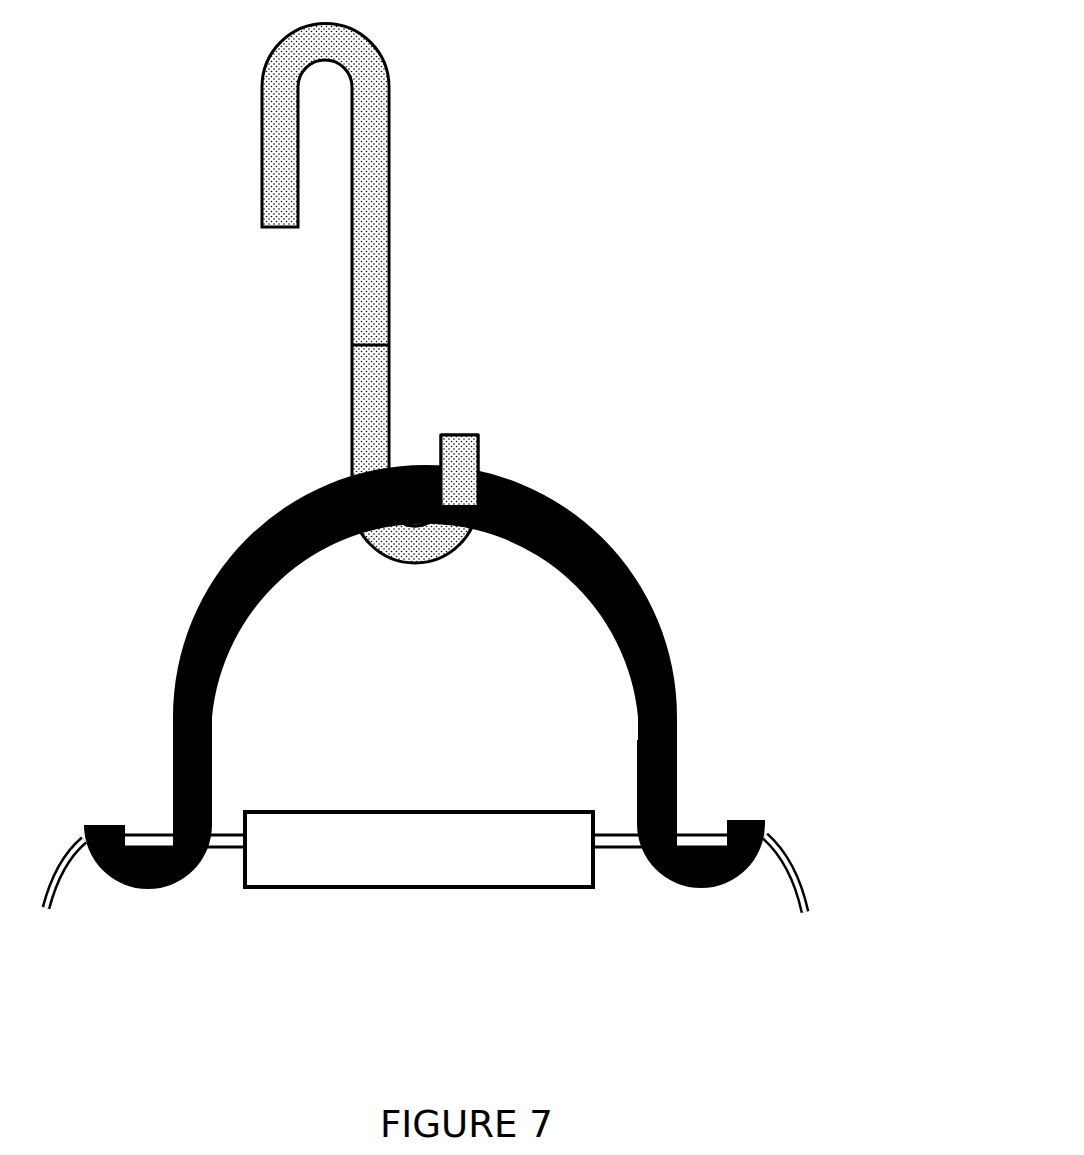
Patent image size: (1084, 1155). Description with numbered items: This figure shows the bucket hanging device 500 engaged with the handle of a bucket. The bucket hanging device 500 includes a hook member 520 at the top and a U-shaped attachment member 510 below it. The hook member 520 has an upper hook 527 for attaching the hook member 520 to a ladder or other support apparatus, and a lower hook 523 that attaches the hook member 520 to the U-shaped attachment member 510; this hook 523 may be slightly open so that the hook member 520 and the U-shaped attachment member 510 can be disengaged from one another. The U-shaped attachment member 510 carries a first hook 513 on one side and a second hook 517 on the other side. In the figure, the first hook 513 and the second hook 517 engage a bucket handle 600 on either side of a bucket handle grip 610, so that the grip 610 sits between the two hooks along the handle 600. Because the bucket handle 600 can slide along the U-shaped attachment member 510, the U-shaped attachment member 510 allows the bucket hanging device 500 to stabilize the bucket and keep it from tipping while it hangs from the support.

The bucket hanging device 500 is at (500, 468).
The U-shaped attachment member 510 is at (262, 587).
The first hook 513 is at (677, 780).
The second hook 517 is at (172, 813).
The hook member 520 is at (320, 293).
The hook 523 is at (480, 452).
The hook 527 is at (258, 170).
The bucket handle 600 is at (230, 840).
The bucket handle grip 610 is at (419, 849).